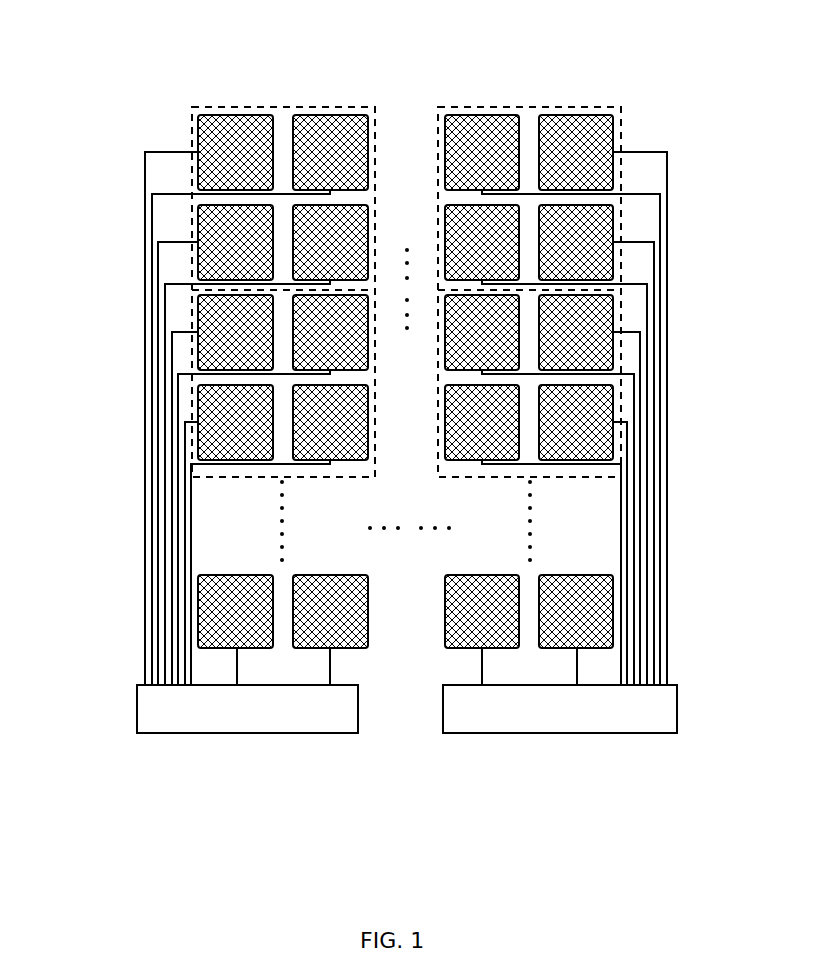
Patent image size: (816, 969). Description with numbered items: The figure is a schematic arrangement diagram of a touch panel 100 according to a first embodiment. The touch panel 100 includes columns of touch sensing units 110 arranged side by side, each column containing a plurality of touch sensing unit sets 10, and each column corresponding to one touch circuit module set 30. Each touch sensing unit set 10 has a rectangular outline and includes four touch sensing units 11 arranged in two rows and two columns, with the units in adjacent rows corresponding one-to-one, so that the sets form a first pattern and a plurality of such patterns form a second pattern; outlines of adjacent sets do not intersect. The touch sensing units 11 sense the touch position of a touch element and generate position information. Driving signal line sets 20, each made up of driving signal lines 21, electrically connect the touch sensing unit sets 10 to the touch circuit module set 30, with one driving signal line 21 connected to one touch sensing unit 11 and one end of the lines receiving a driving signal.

The touch panel 100 is at (422, 26).
The column of touch sensing units 110 is at (266, 76).
The touch sensing unit set 10 is at (192, 128).
The touch sensing unit 11 is at (340, 143).
The driving signal line set 20 is at (73, 297).
The driving signal line 21 is at (145, 158).
The touch circuit module set 30 is at (443, 718).